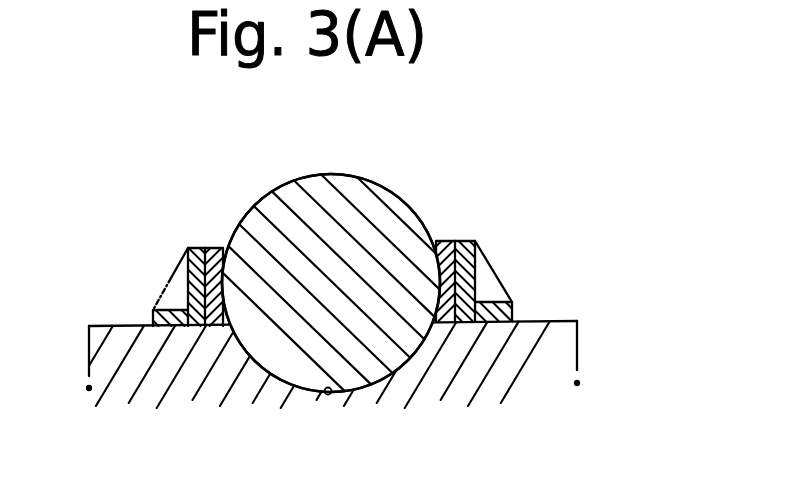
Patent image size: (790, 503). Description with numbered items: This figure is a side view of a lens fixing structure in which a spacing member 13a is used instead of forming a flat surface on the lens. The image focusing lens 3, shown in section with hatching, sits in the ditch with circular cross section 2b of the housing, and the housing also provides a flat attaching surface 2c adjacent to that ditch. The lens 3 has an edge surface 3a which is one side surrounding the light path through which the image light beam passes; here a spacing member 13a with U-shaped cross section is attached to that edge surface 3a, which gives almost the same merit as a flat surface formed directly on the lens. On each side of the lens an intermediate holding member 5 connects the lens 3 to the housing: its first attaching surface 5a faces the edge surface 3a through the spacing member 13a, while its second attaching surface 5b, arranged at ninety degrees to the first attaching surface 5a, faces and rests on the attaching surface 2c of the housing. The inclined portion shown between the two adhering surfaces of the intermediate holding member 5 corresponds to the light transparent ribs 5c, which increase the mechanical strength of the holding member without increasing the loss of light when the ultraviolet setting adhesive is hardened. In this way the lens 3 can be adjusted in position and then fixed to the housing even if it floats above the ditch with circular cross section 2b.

The lens 3 is at (295, 178).
The edge surface 3a is at (348, 176).
The spacing member 13a is at (213, 247).
The intermediate holding member 5 is at (195, 248).
The first attaching surface 5a is at (212, 327).
The second attaching surface 5b is at (190, 327).
The light transparent ribs 5c is at (170, 278).
The ditch with circular cross section 2b is at (327, 398).
The attaching surface 2c is at (142, 325).